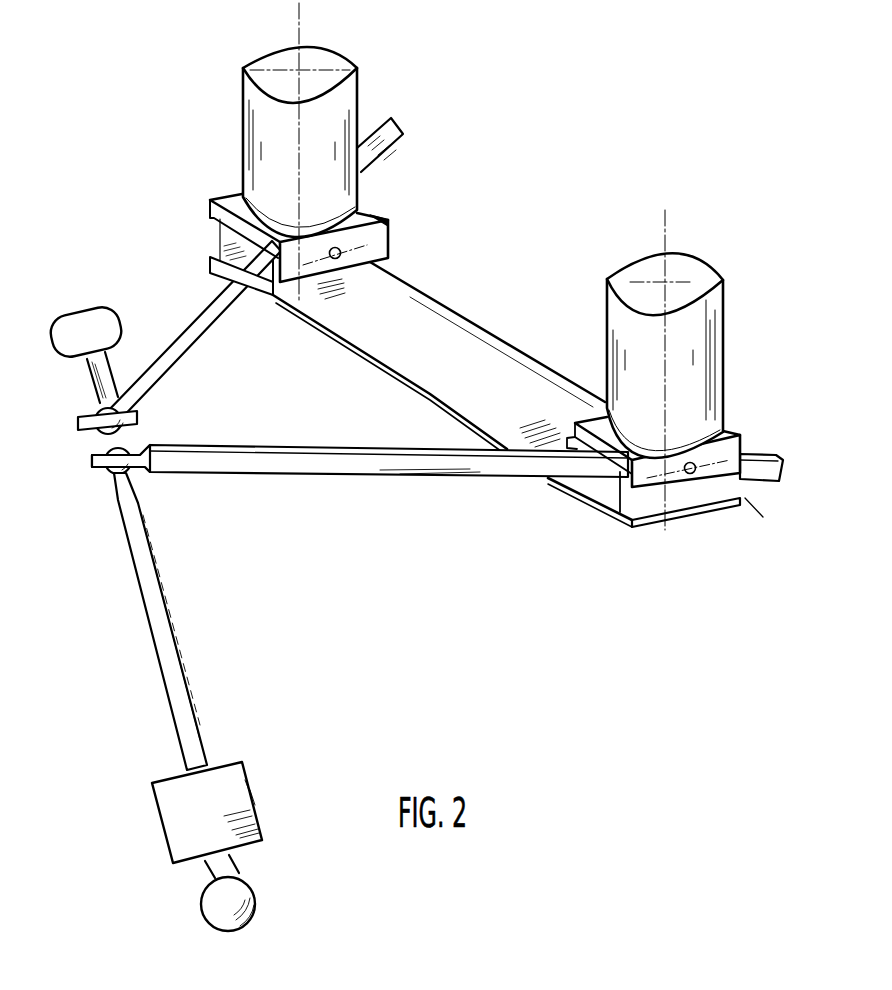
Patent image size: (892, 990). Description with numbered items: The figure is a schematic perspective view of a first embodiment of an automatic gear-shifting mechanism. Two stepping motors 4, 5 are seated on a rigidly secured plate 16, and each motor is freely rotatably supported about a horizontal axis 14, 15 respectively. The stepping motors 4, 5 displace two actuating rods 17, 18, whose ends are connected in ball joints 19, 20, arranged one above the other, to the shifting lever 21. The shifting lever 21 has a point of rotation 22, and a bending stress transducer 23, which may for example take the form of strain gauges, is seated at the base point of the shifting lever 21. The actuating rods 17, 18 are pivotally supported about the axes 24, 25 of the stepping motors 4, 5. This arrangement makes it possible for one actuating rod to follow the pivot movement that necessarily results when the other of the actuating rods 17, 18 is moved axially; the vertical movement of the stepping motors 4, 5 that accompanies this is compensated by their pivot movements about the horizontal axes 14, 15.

The stepping motor 4 is at (357, 88).
The stepping motor 5 is at (722, 380).
The horizontal axis 14 is at (345, 262).
The horizontal axis 15 is at (692, 478).
The plate 16 is at (597, 505).
The actuating rod 17 is at (183, 355).
The actuating rod 18 is at (192, 450).
The ball joint 19 is at (98, 412).
The ball joint 20 is at (108, 456).
The shifting lever 21 is at (174, 652).
The point of rotation 22 is at (256, 906).
The bending stress transducer 23 is at (270, 806).
The axis 24 is at (300, 17).
The axis 25 is at (665, 222).